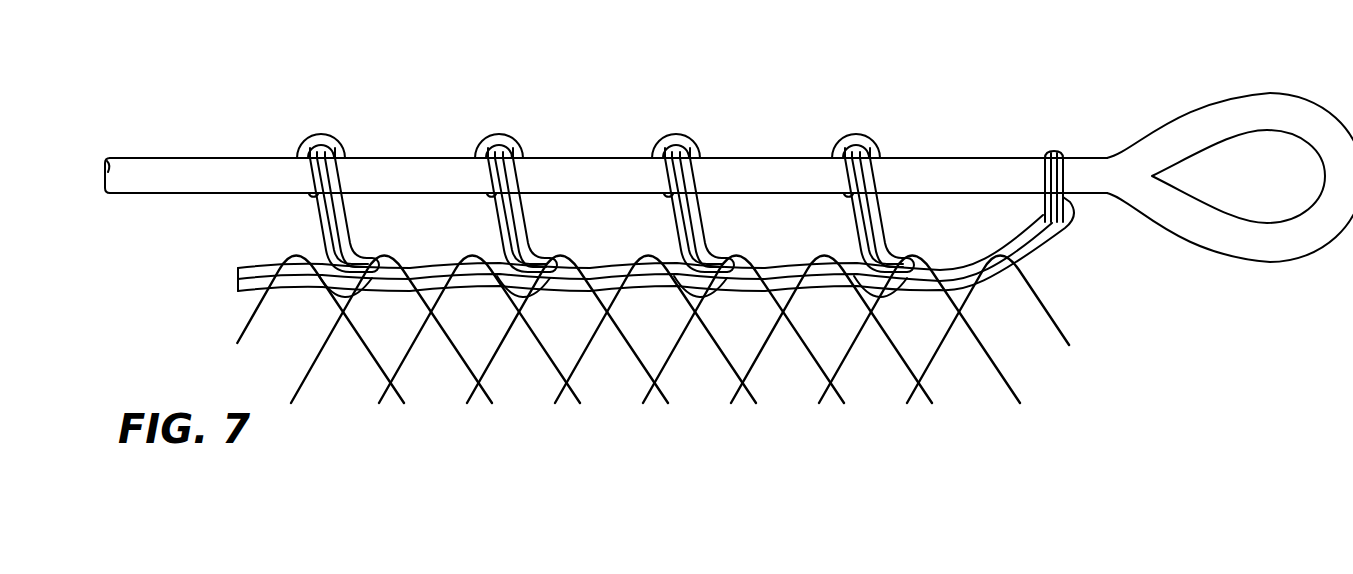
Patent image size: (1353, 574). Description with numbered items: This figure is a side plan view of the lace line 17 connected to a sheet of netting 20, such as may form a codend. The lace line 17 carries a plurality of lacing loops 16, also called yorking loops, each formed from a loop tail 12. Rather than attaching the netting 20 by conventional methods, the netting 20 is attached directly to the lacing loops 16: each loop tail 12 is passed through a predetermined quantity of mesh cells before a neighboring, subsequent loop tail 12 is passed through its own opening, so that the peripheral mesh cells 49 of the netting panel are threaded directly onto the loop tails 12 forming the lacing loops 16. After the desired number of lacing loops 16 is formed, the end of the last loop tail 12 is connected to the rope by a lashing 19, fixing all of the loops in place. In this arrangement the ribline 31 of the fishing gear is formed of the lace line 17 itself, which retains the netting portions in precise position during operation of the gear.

The loop tail 12 is at (428, 262).
The lacing loop 16 is at (375, 252).
The lace line 17 is at (729, 177).
The lashing 19 is at (1055, 151).
The netting 20 is at (499, 352).
The ribline 31 is at (378, 156).
The peripheral mesh cell 49 is at (660, 322).